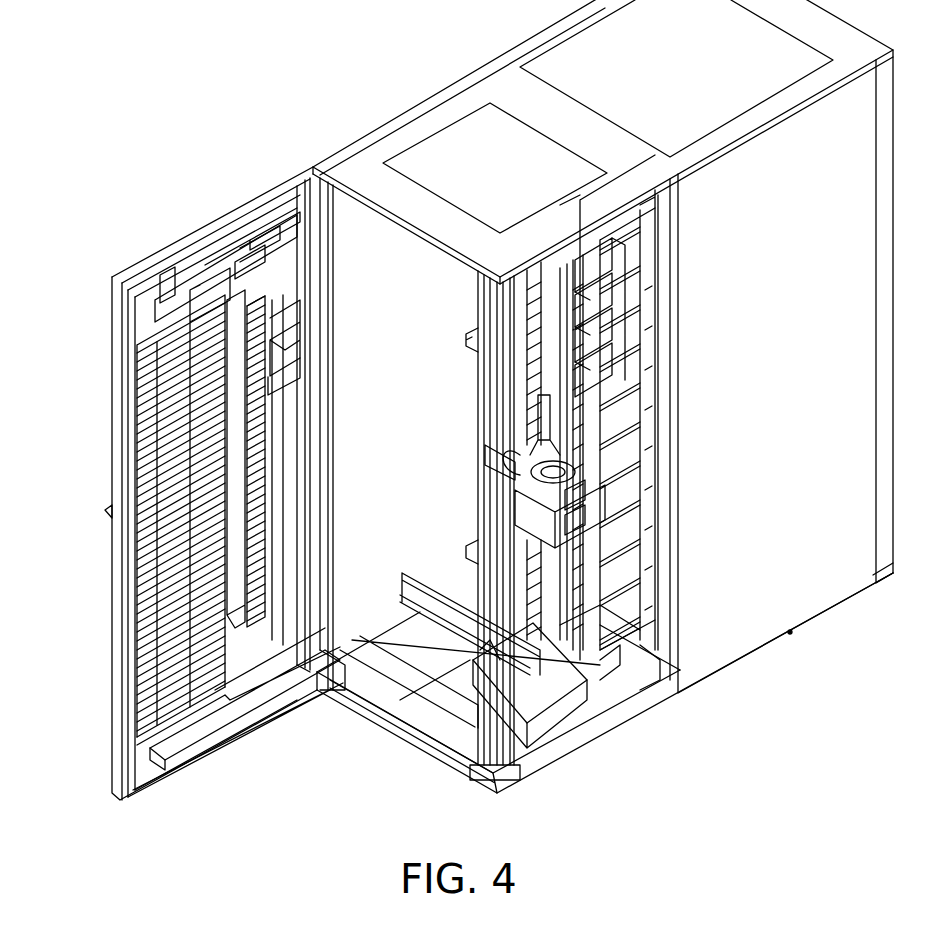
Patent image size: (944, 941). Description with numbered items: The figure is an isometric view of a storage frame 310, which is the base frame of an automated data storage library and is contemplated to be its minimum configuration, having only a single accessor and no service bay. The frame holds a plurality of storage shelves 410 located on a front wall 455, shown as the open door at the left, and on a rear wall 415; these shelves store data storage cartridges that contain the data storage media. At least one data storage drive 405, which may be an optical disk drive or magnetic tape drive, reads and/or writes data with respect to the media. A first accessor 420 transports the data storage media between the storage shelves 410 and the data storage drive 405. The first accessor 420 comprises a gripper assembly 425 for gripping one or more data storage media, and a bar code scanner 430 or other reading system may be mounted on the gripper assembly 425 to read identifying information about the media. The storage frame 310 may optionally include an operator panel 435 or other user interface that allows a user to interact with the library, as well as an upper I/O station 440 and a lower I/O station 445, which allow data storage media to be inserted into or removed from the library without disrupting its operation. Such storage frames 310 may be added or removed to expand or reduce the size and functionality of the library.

The storage frame 310 is at (258, 68).
The data storage drive 405 is at (635, 270).
The storage shelves 410 is at (487, 390).
The rear wall 415 is at (478, 310).
The first accessor 420 is at (540, 703).
The gripper assembly 425 is at (657, 487).
The bar code scanner 430 is at (513, 517).
The operator panel 435 is at (290, 283).
The upper I/O station 440 is at (283, 319).
The lower I/O station 445 is at (265, 513).
The front wall 455 is at (113, 458).